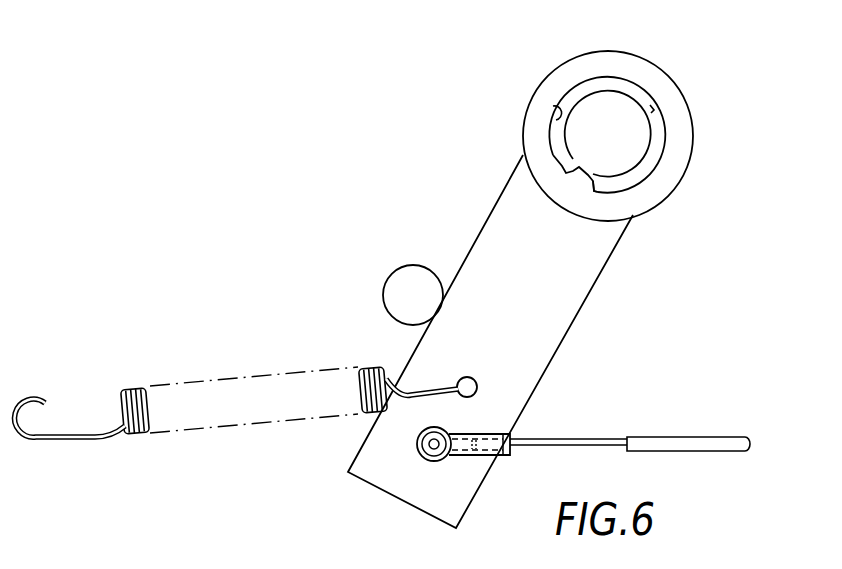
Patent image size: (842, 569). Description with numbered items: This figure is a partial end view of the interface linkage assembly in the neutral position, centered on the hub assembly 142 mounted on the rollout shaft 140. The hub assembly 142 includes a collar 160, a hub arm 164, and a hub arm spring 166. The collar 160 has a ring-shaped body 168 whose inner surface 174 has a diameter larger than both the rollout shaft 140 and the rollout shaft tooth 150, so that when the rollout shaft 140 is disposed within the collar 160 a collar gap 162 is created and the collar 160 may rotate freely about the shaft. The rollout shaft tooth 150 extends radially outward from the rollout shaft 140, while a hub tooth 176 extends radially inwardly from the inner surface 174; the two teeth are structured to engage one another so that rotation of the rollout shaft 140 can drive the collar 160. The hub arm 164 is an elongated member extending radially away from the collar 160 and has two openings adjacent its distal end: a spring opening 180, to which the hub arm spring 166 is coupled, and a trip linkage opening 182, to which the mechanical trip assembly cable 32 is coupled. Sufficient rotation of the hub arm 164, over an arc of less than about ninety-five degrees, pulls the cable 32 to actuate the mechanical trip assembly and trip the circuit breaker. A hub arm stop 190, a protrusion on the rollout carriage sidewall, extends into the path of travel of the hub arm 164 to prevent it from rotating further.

The cable 32 is at (683, 437).
The rollout shaft 140 is at (610, 107).
The hub assembly 142 is at (411, 118).
The rollout shaft tooth 150 is at (563, 158).
The collar 160 is at (642, 68).
The collar gap 162 is at (653, 108).
The hub arm 164 is at (492, 238).
The hub arm spring 166 is at (141, 389).
The ring-shaped body 168 is at (558, 75).
The inner surface 174 is at (556, 118).
The hub tooth 176 is at (598, 186).
The spring opening 180 is at (466, 377).
The trip linkage opening 182 is at (417, 440).
The hub arm stop 190 is at (394, 268).